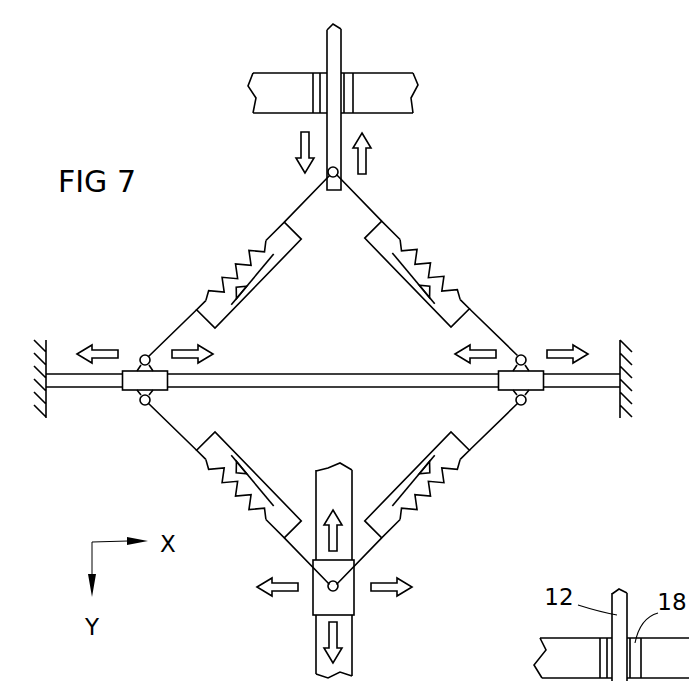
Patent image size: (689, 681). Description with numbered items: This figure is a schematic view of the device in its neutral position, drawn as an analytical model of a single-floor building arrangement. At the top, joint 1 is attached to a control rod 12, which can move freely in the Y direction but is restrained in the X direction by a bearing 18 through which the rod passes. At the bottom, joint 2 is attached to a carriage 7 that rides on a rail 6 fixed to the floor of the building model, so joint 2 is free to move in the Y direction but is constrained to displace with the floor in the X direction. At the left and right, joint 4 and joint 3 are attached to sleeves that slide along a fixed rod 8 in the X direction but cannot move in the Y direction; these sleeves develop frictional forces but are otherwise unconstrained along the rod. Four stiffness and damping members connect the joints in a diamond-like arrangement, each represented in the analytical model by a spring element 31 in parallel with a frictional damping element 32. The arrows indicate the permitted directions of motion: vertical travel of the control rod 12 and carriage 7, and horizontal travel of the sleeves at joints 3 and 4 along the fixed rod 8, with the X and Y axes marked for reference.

The joint # 1 is at (367, 189).
The joint # 2 is at (372, 607).
The joint # 3 is at (532, 341).
The joint # 4 is at (140, 346).
The rail 6 is at (317, 662).
The carriage on rail 7 is at (313, 603).
The fixed rod 8 is at (305, 372).
The control rod 12 is at (329, 50).
The bearing for control rod 18 is at (349, 78).
The spring element in analytical model 31 is at (437, 267).
The frictional damping element in analytical model 32 is at (393, 277).